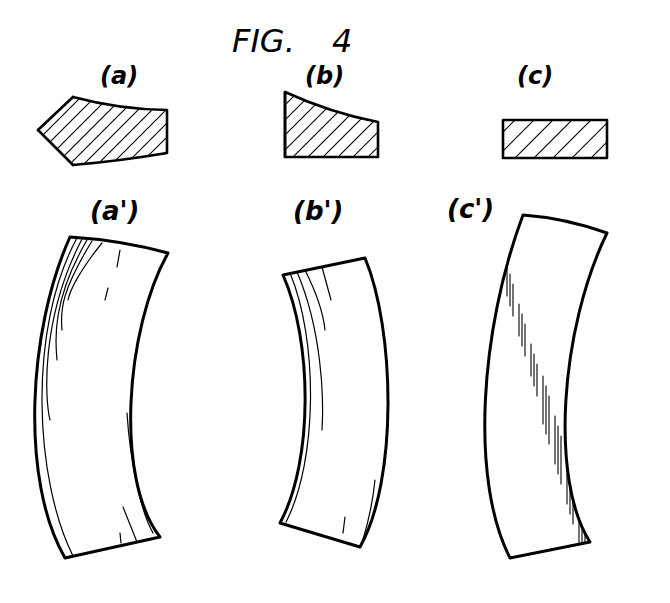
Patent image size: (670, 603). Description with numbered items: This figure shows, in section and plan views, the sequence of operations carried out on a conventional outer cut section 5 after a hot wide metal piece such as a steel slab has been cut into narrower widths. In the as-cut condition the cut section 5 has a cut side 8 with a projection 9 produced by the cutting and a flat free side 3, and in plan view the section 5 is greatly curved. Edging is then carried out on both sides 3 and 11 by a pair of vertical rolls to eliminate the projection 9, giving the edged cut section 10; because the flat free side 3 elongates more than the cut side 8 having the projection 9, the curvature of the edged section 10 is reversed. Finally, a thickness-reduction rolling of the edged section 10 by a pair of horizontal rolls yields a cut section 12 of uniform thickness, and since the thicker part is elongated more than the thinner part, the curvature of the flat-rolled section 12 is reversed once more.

The flat free side 3 is at (170, 138).
The cut section 5 is at (130, 342).
The cut side 8 is at (60, 104).
The projection 9 is at (50, 133).
The cut section after edging 10 is at (375, 352).
The edged side 11 is at (285, 128).
The flat-rolled section 12 is at (560, 350).